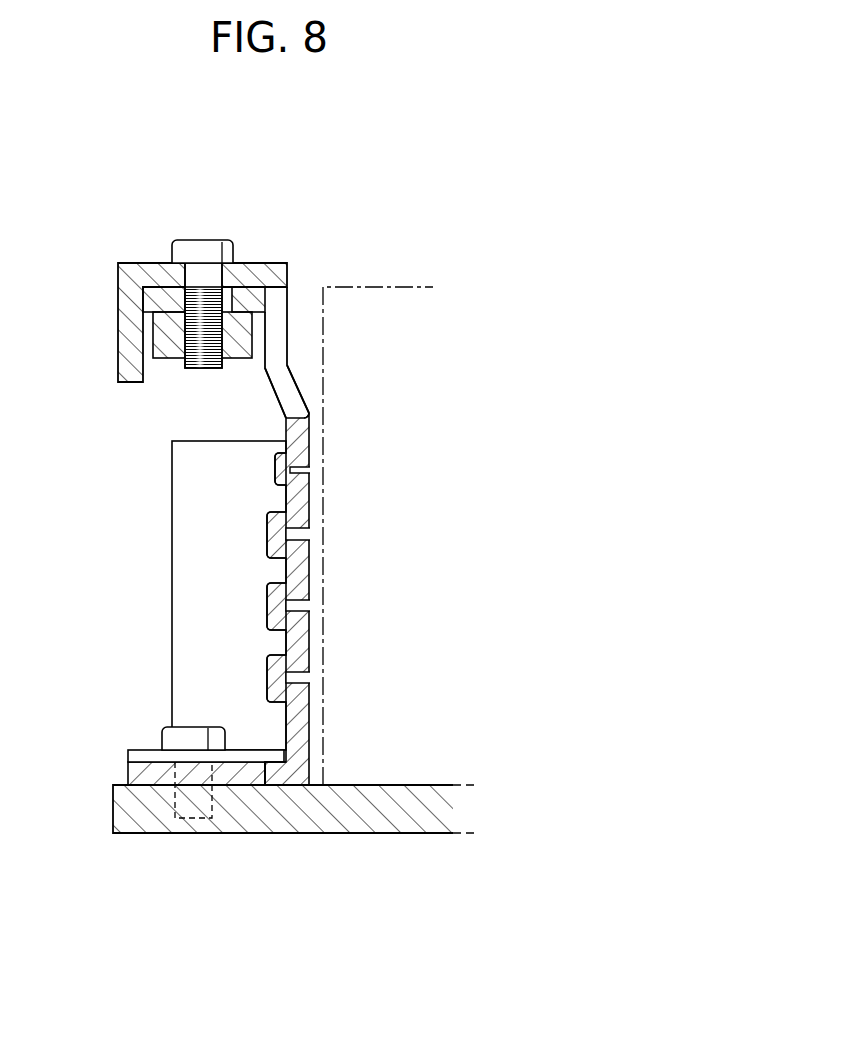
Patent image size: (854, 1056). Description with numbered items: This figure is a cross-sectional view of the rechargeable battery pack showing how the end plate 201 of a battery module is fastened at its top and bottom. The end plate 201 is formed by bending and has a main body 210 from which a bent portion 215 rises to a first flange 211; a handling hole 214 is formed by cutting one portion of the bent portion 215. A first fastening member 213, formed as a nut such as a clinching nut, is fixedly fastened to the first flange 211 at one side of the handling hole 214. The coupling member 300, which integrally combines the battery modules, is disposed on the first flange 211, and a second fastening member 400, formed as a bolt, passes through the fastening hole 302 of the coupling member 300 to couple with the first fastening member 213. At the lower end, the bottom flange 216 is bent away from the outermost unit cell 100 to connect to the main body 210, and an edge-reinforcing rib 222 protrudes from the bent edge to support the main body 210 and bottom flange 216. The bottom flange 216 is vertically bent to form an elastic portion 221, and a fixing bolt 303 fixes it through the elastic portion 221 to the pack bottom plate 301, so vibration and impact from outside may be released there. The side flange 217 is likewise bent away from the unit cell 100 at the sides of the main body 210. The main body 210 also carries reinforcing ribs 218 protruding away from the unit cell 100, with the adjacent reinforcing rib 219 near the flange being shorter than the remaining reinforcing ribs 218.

The unit cell 100 is at (430, 644).
The end plate 201 is at (140, 557).
The main body 210 is at (298, 571).
The first flange 211 is at (247, 293).
The first fastening member 213 is at (172, 348).
The handling hole 214 is at (310, 410).
The bent portion 215 is at (272, 392).
The bottom flange 216 is at (152, 778).
The side flange 217 is at (180, 627).
The reinforcing rib 218 is at (266, 598).
The adjacent reinforcing rib 219 is at (274, 466).
The elastic portion 221 is at (140, 750).
The edge-reinforcing rib 222 is at (284, 748).
The coupling member 300 is at (118, 286).
The pack bottom plate 301 is at (243, 817).
The fastening hole 302 is at (193, 264).
The fixing bolt 303 is at (193, 733).
The second fastening member 400 is at (201, 247).